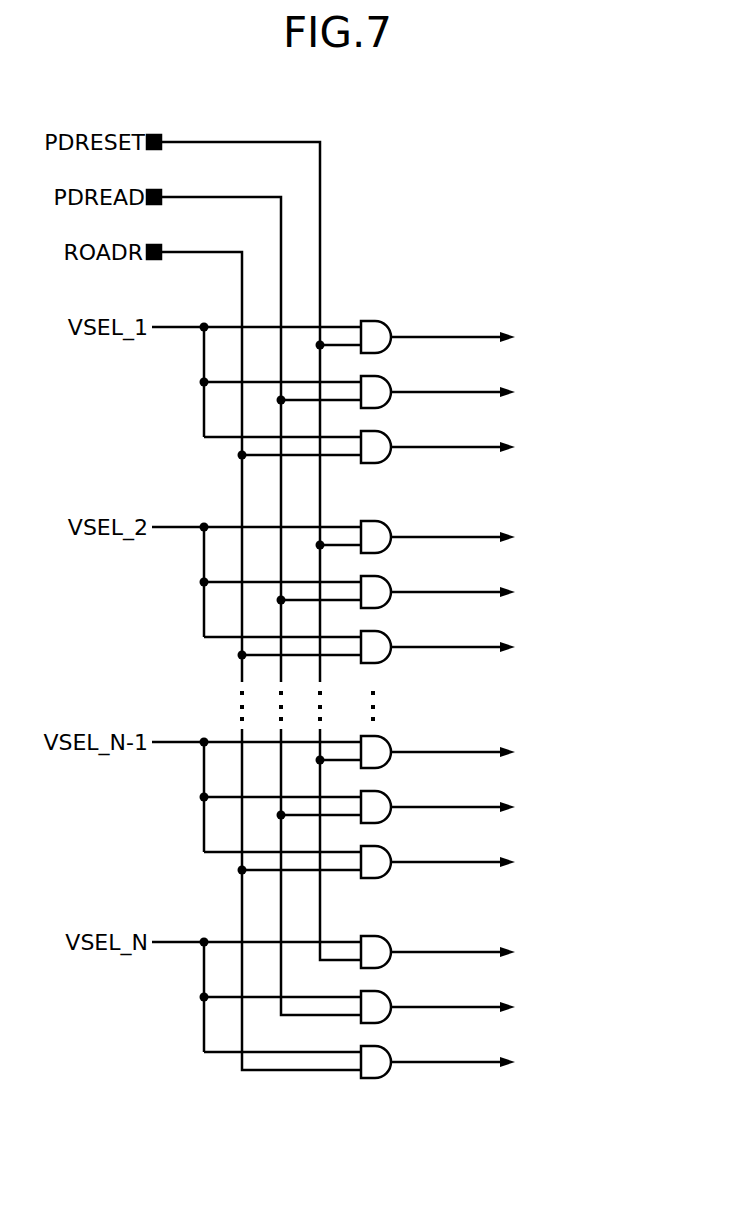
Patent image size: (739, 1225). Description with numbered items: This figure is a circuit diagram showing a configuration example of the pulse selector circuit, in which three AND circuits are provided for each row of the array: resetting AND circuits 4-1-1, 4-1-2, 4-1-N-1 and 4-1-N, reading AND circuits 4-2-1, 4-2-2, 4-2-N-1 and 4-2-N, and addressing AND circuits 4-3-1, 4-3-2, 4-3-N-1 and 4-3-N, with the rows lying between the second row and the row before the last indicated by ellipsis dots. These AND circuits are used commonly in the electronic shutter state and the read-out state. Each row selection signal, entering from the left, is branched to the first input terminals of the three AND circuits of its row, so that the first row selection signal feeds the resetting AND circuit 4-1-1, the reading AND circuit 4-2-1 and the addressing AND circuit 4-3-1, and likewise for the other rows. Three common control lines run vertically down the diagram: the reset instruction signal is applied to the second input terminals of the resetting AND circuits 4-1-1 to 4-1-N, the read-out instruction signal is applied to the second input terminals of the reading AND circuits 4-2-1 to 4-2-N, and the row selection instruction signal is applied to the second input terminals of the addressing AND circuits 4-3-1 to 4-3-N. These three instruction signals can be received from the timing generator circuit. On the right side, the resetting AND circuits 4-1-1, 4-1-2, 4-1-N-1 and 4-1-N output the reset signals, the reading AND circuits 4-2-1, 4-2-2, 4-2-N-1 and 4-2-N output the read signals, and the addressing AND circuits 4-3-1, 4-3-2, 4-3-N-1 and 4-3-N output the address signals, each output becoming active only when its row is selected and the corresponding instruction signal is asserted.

The resetting AND circuit 4-1-1 is at (392, 327).
The reading AND circuit 4-2-1 is at (392, 382).
The addressing AND circuit 4-3-1 is at (392, 437).
The resetting AND circuit 4-1-2 is at (392, 527).
The reading AND circuit 4-2-2 is at (392, 582).
The addressing AND circuit 4-3-2 is at (392, 637).
The resetting AND circuit 4-1-N-1 is at (392, 742).
The reading AND circuit 4-2-N-1 is at (392, 797).
The addressing AND circuit 4-3-N-1 is at (392, 852).
The resetting AND circuit 4-1-N is at (392, 942).
The reading AND circuit 4-2-N is at (392, 997).
The addressing AND circuit 4-3-N is at (392, 1052).